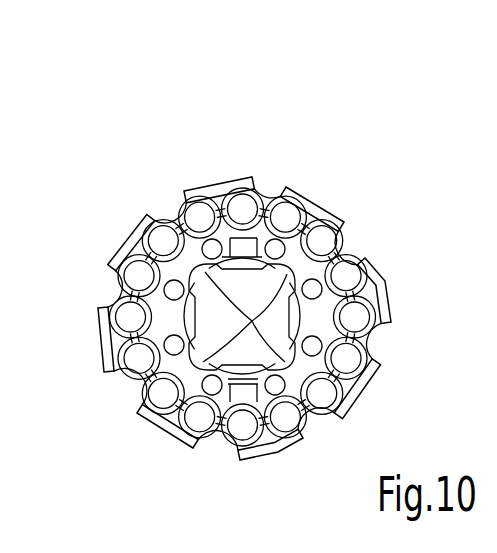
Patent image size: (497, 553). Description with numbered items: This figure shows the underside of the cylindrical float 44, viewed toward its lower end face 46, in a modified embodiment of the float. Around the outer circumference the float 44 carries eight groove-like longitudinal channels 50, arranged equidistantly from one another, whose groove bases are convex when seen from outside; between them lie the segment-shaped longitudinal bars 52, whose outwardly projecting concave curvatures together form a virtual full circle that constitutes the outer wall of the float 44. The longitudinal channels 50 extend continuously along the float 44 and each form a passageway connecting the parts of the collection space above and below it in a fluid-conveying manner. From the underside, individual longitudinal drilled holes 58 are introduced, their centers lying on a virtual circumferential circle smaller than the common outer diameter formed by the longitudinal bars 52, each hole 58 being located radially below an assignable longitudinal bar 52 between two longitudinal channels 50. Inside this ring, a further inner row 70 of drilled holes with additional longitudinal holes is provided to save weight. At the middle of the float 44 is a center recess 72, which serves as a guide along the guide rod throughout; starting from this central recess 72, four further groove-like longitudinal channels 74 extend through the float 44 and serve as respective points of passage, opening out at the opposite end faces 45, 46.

The float 44 is at (388, 277).
The lower end face 46 is at (270, 432).
The longitudinal channels 50 is at (171, 218).
The longitudinal bars 52 is at (126, 240).
The longitudinal drilled holes 58 is at (201, 214).
The inner row of drilled holes 70 is at (273, 245).
The center recess 72 is at (205, 327).
The further groove-like longitudinal channels 74 is at (245, 317).
The upper end face 45 is at (116, 546).